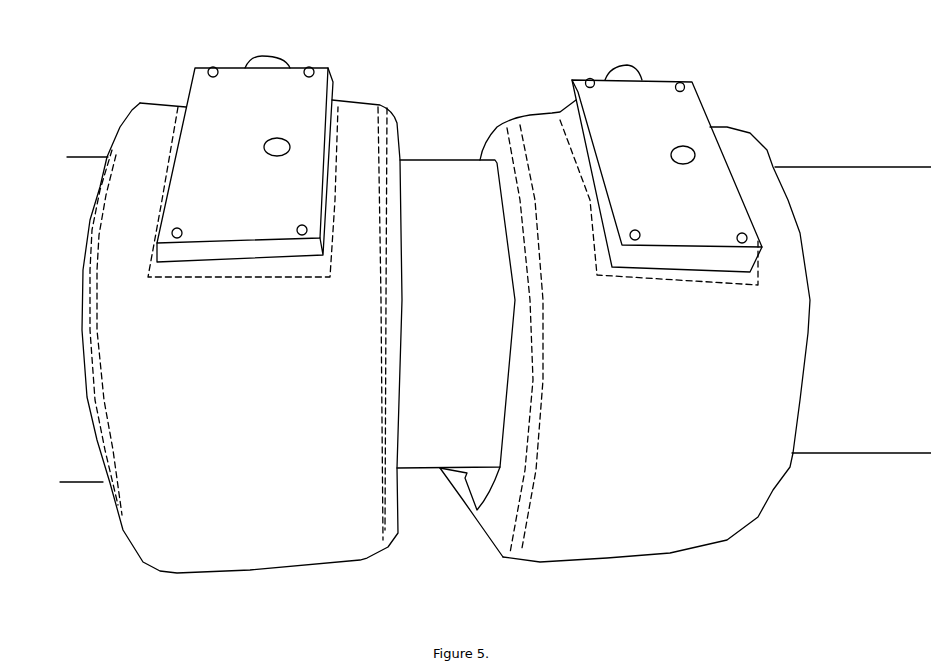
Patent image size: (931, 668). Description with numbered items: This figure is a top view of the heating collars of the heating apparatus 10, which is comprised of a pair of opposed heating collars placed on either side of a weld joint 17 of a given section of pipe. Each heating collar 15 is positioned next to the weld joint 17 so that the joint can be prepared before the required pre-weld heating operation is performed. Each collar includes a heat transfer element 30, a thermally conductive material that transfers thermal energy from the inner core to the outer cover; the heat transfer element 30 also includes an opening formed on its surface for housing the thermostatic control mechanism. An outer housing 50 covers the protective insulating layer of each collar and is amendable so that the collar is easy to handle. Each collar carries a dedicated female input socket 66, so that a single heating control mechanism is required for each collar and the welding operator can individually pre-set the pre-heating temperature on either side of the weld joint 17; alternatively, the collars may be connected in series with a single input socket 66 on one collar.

The heating apparatus 10 is at (285, 83).
The heating collar 15 is at (107, 372).
The weld joint 17 is at (440, 443).
The heat transfer element 30 is at (148, 137).
The outer housing 50 is at (742, 160).
The female input socket 66 is at (258, 57).